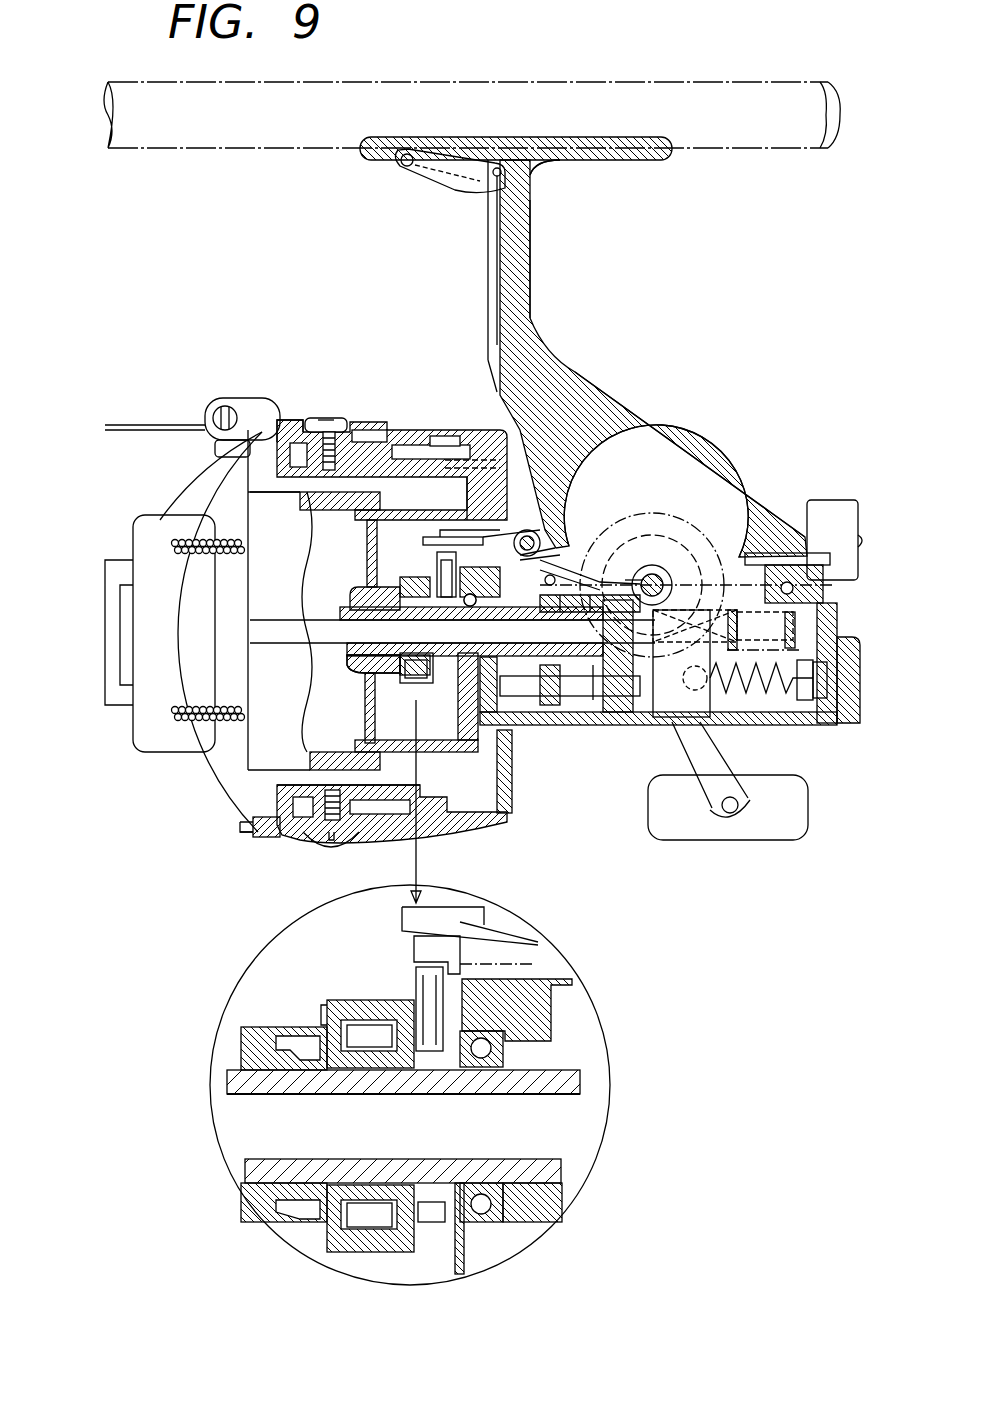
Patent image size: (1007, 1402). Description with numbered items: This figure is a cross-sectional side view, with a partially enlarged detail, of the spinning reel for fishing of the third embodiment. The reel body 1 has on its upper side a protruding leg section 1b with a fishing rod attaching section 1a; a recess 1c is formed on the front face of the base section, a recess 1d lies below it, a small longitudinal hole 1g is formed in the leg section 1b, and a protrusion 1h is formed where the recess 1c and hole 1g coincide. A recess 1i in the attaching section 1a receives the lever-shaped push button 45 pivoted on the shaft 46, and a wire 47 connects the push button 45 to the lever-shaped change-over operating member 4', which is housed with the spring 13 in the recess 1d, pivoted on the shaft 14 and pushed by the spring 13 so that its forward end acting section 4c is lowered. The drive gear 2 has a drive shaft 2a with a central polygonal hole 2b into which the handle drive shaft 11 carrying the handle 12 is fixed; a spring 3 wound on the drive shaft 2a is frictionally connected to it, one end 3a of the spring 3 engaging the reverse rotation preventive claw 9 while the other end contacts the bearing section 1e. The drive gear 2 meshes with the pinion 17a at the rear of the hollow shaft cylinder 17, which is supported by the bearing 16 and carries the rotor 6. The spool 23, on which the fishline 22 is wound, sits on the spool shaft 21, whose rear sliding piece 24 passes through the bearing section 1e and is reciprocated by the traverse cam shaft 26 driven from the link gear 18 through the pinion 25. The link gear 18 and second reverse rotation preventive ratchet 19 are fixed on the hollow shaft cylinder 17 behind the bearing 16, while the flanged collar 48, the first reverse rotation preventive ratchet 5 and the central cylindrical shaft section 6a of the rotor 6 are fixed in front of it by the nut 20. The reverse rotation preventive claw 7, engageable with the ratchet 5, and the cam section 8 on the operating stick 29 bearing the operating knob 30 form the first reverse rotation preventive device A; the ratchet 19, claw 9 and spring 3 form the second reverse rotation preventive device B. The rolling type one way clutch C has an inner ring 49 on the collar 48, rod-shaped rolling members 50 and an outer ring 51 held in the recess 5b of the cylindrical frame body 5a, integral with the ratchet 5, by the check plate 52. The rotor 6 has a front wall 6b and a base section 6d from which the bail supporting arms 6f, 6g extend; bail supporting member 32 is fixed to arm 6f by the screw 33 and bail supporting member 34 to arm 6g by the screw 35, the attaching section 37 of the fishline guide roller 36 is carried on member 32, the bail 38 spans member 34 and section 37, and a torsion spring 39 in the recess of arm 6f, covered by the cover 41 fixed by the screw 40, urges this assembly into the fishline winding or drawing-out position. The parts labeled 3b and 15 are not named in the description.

The reel body 1 is at (545, 345).
The fishing rod attaching section 1a is at (555, 137).
The leg section 1b is at (532, 268).
The recess 1c is at (540, 410).
The recess 1d is at (535, 964).
The bearing section 1e is at (615, 725).
The small longitudinal hole 1g is at (530, 205).
The protrusion 1h is at (488, 340).
The recess 1i is at (500, 137).
The drive gear 2 is at (736, 535).
The drive shaft 2a is at (660, 565).
The polygonal hole 2b is at (805, 598).
The spring 3 is at (620, 585).
The one end of the spring 3a is at (590, 590).
The gear hub 3b is at (640, 590).
The lever-shaped change-over operating member 4' is at (548, 494).
The forward end acting section 4c is at (445, 530).
The first reverse rotation preventive ratchet 5 is at (440, 680).
The cylindrical frame body 5a is at (400, 680).
The recess 5b is at (319, 1008).
The rotor 6 is at (262, 832).
The central cylindrical shaft section 6a is at (360, 670).
The front wall 6b is at (268, 798).
The base section of bail supporting arm 6d is at (505, 445).
The bail supporting arm 6f is at (300, 492).
The bail supporting arm 6g is at (262, 837).
The reverse rotation preventive claw 7 is at (422, 558).
The cam section 8 is at (413, 545).
The reverse rotation preventive claw 9 is at (560, 565).
The handle drive shaft 11 is at (700, 545).
The handle 12 is at (735, 745).
The spring 13 is at (460, 445).
The shaft 14 is at (550, 545).
The fishing rod 15 is at (170, 150).
The bearing 16 is at (492, 815).
The hollow shaft cylinder 17 is at (330, 655).
The pinion 17a is at (612, 725).
The link gear 18 is at (568, 700).
The second reverse rotation preventive ratchet 19 is at (510, 770).
The nut 20 is at (360, 665).
The spool shaft 21 is at (320, 628).
The fishline 22 is at (108, 425).
The spool 23 is at (150, 720).
The sliding piece 24 is at (672, 722).
The pinion 25 is at (548, 705).
The traverse cam shaft 26 is at (596, 705).
The operating stick 29 is at (805, 553).
The operating knob 30 is at (850, 500).
The bail supporting member 32 is at (228, 398).
The screw 33 is at (288, 420).
The bail supporting member 34 is at (290, 848).
The screw 35 is at (322, 848).
The fishline guide roller 36 is at (212, 440).
The attaching section 37 is at (210, 447).
The bail 38 is at (247, 830).
The torsion spring 39 is at (321, 418).
The screw 40 is at (445, 436).
The cover 41 is at (368, 430).
The lever-shaped push button 45 is at (440, 190).
The shaft 46 is at (398, 172).
The wire 47 is at (540, 180).
The collar having a flange 48 is at (280, 1040).
The inner ring 49 is at (375, 1230).
The rolling member 50 is at (392, 1094).
The outer ring 51 is at (370, 1045).
The check plate 52 is at (300, 1219).
The first reverse rotation preventive device A is at (395, 567).
The second reverse rotation preventive device B is at (632, 580).
The rolling type one way clutch C is at (385, 583).